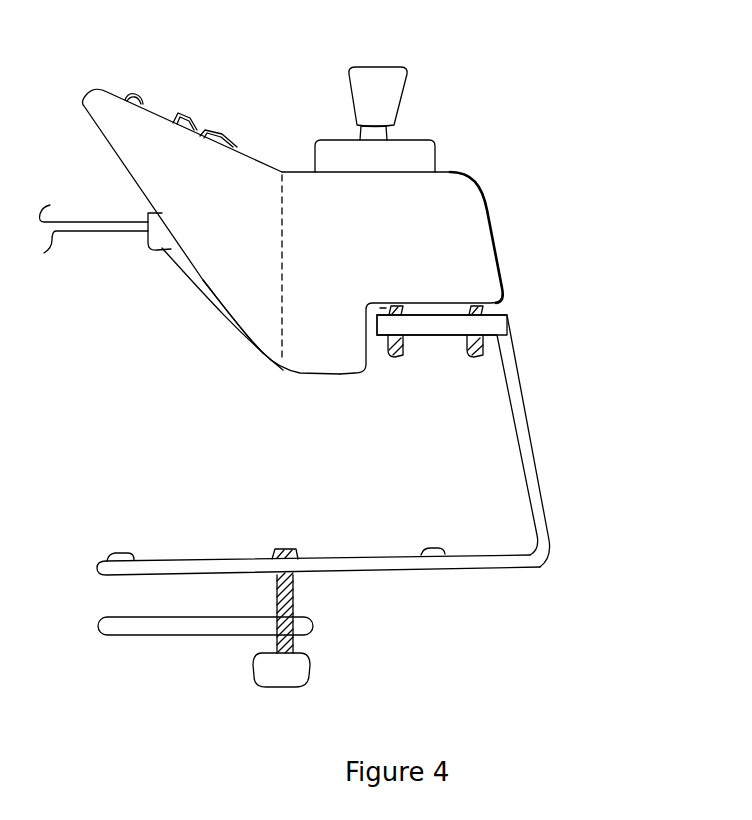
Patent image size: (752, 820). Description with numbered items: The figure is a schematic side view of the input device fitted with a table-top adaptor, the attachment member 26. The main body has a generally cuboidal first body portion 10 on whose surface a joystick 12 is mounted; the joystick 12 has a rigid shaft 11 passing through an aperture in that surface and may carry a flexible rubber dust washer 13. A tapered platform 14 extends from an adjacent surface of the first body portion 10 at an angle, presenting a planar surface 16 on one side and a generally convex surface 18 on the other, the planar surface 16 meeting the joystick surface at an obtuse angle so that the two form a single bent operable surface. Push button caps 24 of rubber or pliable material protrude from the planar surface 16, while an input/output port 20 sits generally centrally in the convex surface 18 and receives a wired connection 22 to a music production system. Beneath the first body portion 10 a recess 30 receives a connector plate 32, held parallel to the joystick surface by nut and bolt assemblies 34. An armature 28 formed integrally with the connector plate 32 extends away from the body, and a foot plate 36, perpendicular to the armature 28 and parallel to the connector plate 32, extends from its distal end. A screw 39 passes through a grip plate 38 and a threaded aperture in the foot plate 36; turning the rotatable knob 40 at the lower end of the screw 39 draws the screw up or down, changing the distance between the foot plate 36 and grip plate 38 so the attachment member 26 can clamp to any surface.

The first body portion 10 is at (394, 268).
The shaft 11 is at (383, 135).
The joystick 12 is at (402, 100).
The rubber dust washer 13 is at (437, 155).
The tapered platform 14 is at (228, 214).
The planar surface 16 is at (254, 158).
The convex surface 18 is at (217, 293).
The input/output port 20 is at (163, 250).
The wired connection 22 is at (93, 233).
The push button caps 24 is at (136, 91).
The attachment member 26 is at (519, 411).
The armature 28 is at (517, 347).
The recess 30 is at (385, 371).
The connector plate 32 is at (438, 330).
The nut and bolt assemblies 34 is at (395, 360).
The foot plate 36 is at (452, 570).
The grip plate 38 is at (125, 632).
The screw 39 is at (294, 600).
The rotatable knob 40 is at (305, 668).